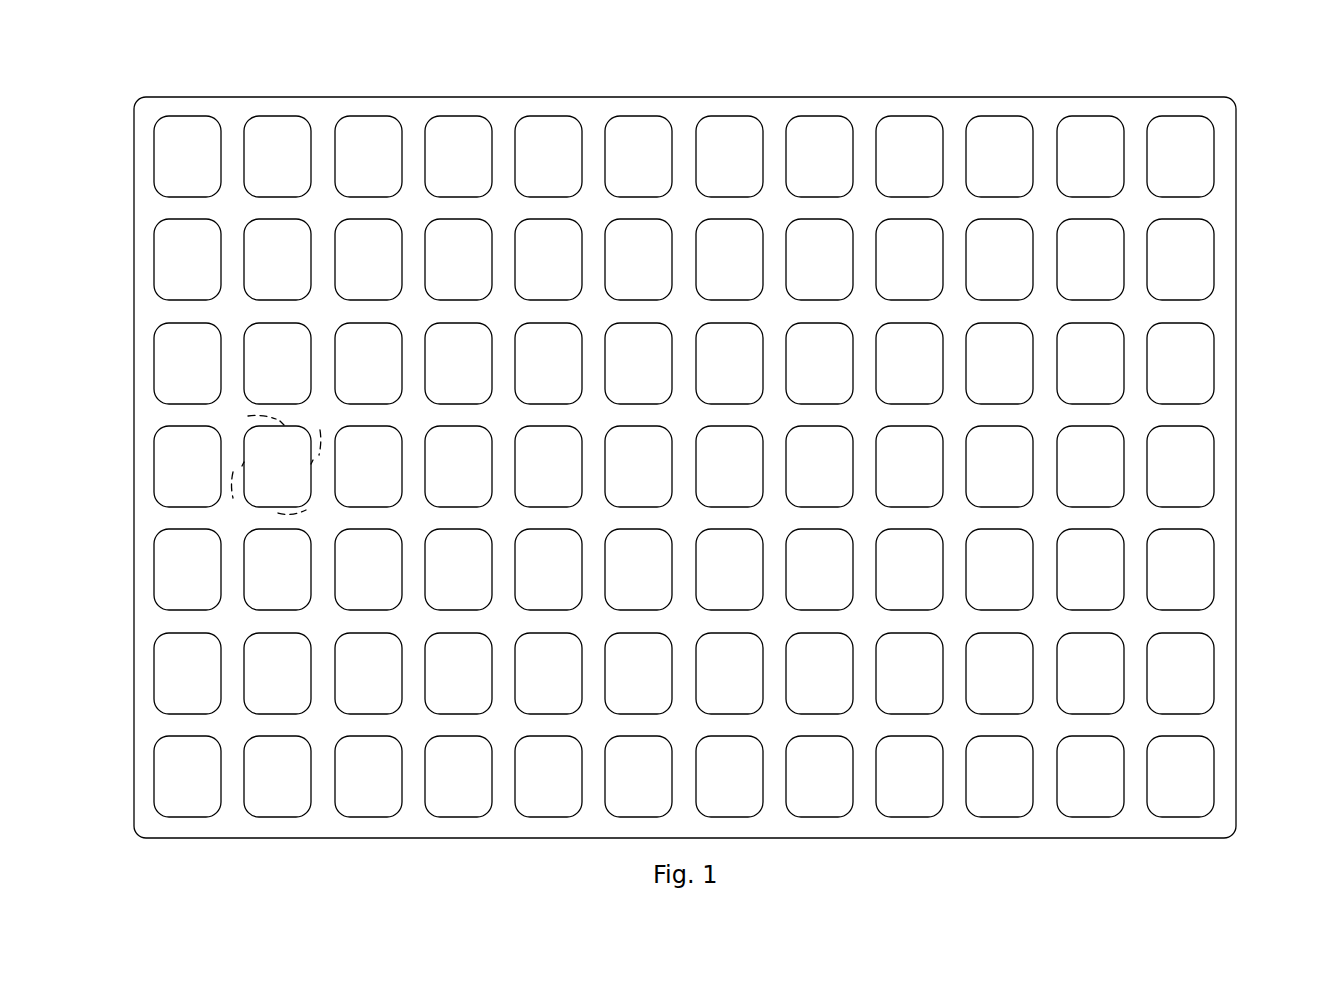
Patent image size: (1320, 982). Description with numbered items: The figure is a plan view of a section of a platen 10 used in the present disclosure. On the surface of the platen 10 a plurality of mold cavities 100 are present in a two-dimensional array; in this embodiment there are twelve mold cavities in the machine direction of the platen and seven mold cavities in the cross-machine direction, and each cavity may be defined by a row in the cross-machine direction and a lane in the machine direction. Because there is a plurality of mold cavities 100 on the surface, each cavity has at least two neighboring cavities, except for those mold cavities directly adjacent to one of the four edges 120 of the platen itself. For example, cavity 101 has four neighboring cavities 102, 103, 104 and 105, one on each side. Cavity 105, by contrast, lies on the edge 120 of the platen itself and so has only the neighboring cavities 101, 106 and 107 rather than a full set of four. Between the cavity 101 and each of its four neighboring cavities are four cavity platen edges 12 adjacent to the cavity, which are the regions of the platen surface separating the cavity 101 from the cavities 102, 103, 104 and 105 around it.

The platen 10 is at (684, 462).
The cavity platen edges 12 is at (276, 463).
The mold cavities 100 is at (1161, 167).
The cavity 101 is at (258, 478).
The neighboring cavity 102 is at (258, 375).
The neighboring cavity 103 is at (388, 478).
The neighboring cavity 104 is at (258, 581).
The neighboring cavity 105 is at (168, 478).
The neighboring cavity 106 is at (168, 581).
The neighboring cavity 107 is at (168, 375).
The edge of the platen 120 is at (401, 96).